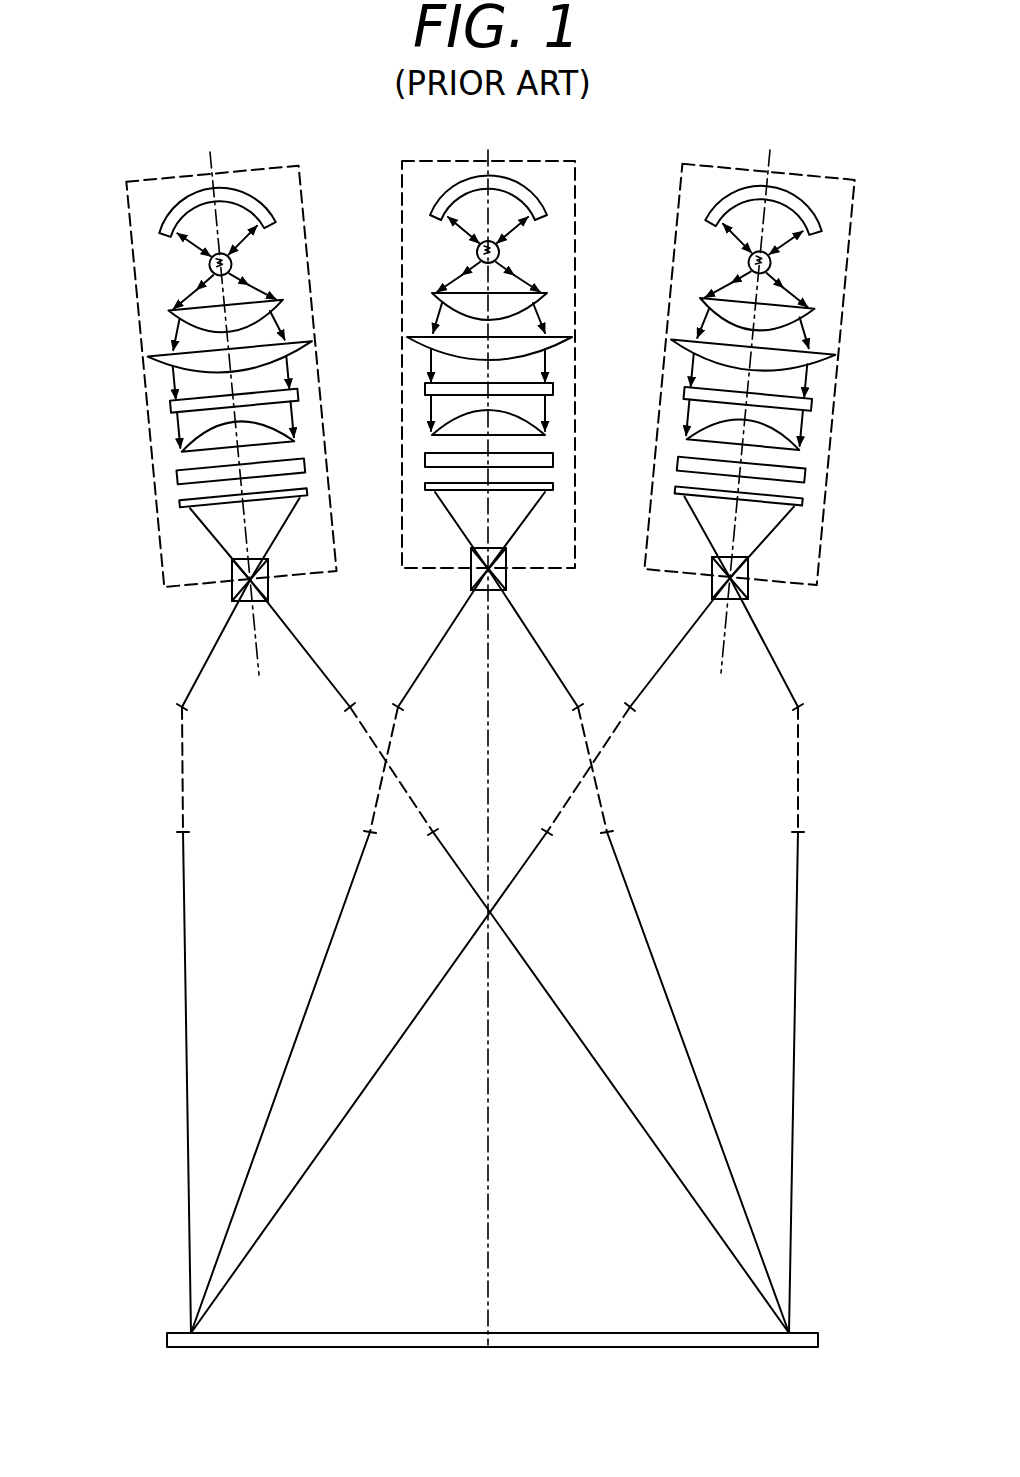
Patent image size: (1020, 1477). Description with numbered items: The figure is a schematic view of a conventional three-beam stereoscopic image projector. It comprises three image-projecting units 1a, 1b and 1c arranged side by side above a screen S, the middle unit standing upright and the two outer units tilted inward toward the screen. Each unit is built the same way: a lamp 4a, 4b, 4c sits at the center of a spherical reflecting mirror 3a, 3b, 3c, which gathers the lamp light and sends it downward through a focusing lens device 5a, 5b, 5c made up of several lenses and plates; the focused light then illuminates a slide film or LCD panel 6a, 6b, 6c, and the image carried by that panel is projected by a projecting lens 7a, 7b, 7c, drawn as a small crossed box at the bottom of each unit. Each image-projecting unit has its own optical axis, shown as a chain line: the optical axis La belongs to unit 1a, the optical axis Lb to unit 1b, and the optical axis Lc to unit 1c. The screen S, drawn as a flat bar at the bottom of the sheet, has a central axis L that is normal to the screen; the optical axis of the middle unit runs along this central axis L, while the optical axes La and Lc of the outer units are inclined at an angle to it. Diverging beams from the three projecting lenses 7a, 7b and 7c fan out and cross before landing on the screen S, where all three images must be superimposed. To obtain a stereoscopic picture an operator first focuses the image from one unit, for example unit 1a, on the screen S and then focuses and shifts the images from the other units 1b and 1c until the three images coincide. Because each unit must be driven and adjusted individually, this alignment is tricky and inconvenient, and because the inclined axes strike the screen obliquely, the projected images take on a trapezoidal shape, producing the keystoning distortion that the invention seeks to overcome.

The image-projecting unit 1a is at (148, 484).
The image-projecting unit 1b is at (400, 464).
The image-projecting unit 1c is at (651, 464).
The spherical reflecting mirror 3a is at (247, 191).
The spherical reflecting mirror 3b is at (530, 192).
The spherical reflecting mirror 3c is at (800, 201).
The lamp 4a is at (232, 262).
The lamp 4b is at (499, 252).
The lamp 4c is at (768, 261).
The focusing lens device 5a is at (132, 313).
The focusing lens device 5b is at (395, 298).
The focusing lens device 5c is at (656, 410).
The slide film or LCD panel 6a is at (303, 493).
The slide film or LCD panel 6b is at (545, 492).
The slide film or LCD panel 6c is at (793, 502).
The projecting lens 7a is at (270, 588).
The projecting lens 7b is at (507, 578).
The projecting lens 7c is at (749, 586).
The optical axis La is at (255, 638).
The optical axis Lb is at (489, 652).
The optical axis Lc is at (720, 640).
The central axis L is at (490, 1082).
The screen S is at (800, 1333).